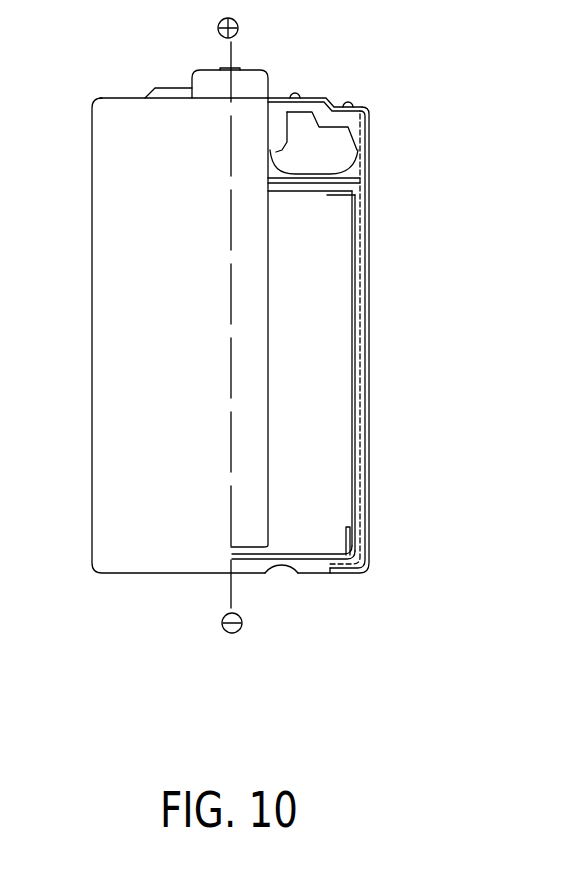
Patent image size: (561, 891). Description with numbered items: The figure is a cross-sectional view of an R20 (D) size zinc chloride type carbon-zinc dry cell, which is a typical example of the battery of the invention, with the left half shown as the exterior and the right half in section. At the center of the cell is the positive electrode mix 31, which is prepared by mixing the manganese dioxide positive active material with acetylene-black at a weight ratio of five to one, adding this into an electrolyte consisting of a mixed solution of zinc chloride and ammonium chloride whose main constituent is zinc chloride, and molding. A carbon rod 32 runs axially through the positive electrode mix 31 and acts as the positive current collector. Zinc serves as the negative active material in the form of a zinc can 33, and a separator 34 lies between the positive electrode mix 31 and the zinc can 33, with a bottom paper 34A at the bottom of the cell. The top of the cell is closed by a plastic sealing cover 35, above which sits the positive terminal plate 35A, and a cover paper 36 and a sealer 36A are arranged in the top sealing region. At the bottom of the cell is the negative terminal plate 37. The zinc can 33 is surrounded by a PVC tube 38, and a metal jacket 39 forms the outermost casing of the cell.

The positive electrode mix 31 is at (315, 282).
The carbon rod 32 is at (252, 247).
The zinc can 33 is at (340, 362).
The separator 34 is at (340, 305).
The bottom paper 34A is at (309, 541).
The plastic sealing cover 35 is at (301, 121).
The positive terminal plate 35A is at (313, 91).
The cover paper 36 is at (319, 197).
The sealer 36A is at (318, 167).
The negative terminal plate 37 is at (309, 588).
The PVC tube 38 is at (377, 433).
The metal jacket 39 is at (380, 468).